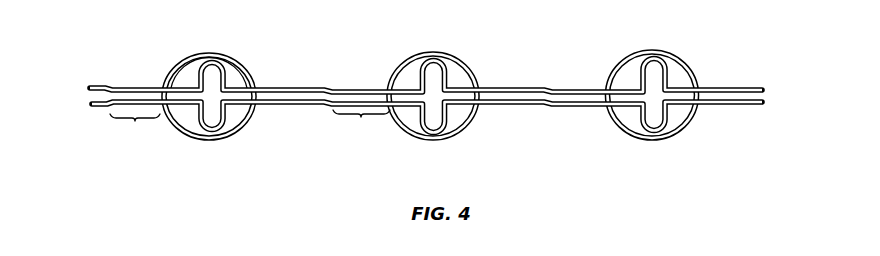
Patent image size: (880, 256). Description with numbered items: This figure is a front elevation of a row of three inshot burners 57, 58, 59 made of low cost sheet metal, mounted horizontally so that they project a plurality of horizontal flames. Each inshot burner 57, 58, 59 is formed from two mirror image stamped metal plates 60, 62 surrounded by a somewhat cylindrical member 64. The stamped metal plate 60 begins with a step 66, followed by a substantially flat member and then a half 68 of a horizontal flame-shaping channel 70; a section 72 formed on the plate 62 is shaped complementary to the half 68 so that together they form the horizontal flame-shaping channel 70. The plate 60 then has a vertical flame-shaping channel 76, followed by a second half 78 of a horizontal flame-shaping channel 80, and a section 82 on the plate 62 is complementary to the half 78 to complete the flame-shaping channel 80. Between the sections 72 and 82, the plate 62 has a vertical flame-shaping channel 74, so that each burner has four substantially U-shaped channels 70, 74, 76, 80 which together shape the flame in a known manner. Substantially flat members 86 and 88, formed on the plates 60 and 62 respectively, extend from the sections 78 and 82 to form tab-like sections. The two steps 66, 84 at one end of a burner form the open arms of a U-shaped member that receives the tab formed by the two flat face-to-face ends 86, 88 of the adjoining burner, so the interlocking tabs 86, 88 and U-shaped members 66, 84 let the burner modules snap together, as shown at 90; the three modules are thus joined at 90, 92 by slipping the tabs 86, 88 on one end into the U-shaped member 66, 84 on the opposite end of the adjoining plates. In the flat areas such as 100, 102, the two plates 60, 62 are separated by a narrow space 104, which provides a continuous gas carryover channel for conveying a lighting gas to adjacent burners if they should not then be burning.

The inshot burner 57 is at (223, 148).
The inshot burner 58 is at (468, 138).
The inshot burner 59 is at (690, 130).
The stamped metal plate 60 is at (147, 92).
The stamped metal plate 62 is at (272, 106).
The cylindrical member 64 is at (248, 64).
The step 66 is at (100, 86).
The half of horizontal flame-shaping channel 68 is at (208, 60).
The horizontal flame-shaping channel 70 is at (207, 125).
The section 72 is at (196, 110).
The vertical flame-shaping channel 74 is at (215, 124).
The vertical flame-shaping channel 76 is at (211, 62).
The second half of horizontal flame-shaping channel 78 is at (250, 74).
The horizontal flame-shaping channel 80 is at (238, 116).
The section 82 is at (250, 112).
The step 84 is at (100, 106).
The flat member 86 is at (330, 88).
The flat member 88 is at (318, 106).
The snap joint 90 is at (331, 114).
The joint 92 is at (559, 112).
The flat area 100 is at (118, 126).
The flat area 102 is at (333, 121).
The narrow space 104 is at (158, 90).